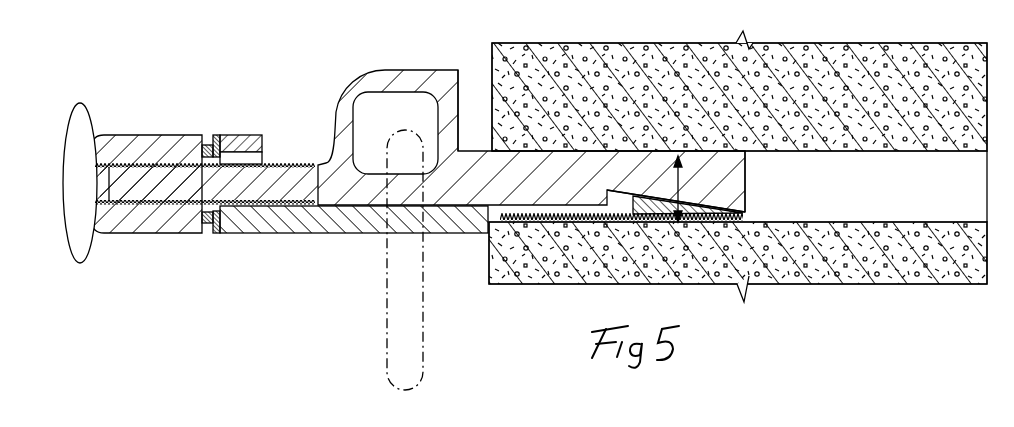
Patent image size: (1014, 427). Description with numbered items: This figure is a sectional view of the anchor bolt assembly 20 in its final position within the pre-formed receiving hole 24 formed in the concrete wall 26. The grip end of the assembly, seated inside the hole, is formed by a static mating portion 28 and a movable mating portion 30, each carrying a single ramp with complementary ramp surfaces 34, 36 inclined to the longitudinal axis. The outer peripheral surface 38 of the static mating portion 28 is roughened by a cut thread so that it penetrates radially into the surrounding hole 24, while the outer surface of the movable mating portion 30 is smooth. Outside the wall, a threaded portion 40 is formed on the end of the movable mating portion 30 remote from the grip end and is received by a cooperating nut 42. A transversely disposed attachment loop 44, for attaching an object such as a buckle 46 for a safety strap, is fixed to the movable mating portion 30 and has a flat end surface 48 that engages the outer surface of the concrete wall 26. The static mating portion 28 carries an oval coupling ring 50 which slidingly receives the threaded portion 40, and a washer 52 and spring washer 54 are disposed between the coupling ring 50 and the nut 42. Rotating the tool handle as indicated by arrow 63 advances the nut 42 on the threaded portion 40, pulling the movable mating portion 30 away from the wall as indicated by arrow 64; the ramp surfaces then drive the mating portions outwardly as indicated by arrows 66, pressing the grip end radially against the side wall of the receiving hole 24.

The anchor bolt assembly 20 is at (542, 128).
The pre-formed receiving hole 24 is at (897, 152).
The concrete wall 26 is at (772, 44).
The static mating portion 28 is at (286, 236).
The movable mating portion 30 is at (748, 168).
The ramp surface 34 is at (726, 212).
The ramp surface 36 is at (648, 191).
The outer peripheral surface 38 is at (646, 261).
The threaded portion 40 is at (542, 128).
The nut 42 is at (146, 236).
The attachment loop 44 is at (426, 72).
The buckle 46 is at (385, 347).
The flat end surface 48 is at (462, 92).
The coupling ring 50 is at (262, 140).
The washer 52 is at (217, 137).
The spring washer 54 is at (207, 145).
The arrow 63 is at (86, 108).
The arrow 64 is at (176, 186).
The arrows 66 is at (696, 189).